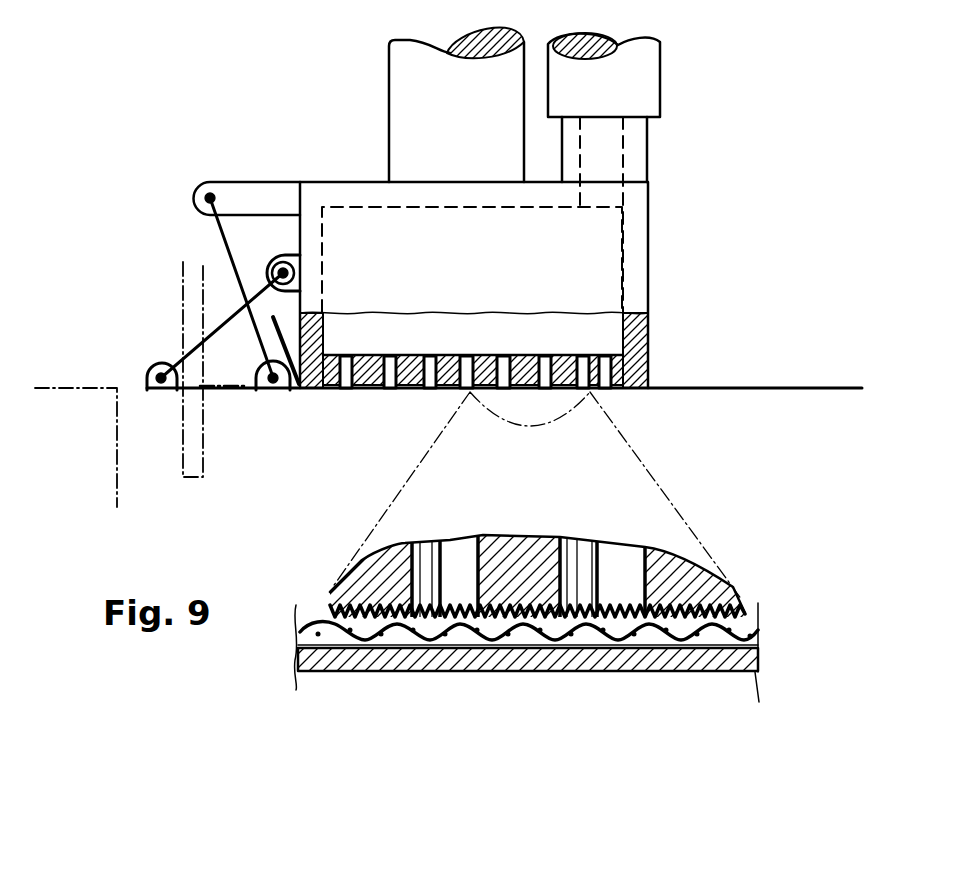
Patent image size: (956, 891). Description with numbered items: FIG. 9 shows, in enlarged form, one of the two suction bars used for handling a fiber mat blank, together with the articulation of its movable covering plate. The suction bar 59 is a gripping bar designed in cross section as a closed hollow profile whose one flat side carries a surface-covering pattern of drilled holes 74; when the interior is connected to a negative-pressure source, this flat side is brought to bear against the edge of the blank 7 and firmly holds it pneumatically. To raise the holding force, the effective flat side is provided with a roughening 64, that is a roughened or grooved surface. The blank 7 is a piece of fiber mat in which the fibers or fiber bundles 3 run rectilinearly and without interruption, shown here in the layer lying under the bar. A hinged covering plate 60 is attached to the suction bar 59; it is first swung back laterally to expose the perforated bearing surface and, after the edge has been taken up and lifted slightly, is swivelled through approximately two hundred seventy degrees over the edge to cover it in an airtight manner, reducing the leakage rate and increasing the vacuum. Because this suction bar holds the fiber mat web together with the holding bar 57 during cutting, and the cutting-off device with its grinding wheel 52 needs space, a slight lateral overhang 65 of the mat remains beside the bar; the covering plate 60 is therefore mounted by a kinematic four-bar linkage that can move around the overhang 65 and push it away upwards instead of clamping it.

The fibers or fiber bundles 3 is at (575, 634).
The blank 7 is at (717, 386).
The grinding wheel 52 is at (203, 458).
The holding bar 57 is at (117, 447).
The suction bar 59 is at (633, 275).
The covering plate 60 is at (400, 397).
The roughening 64 is at (747, 615).
The lateral overhang 65 is at (300, 303).
The drilled holes 74 is at (508, 362).